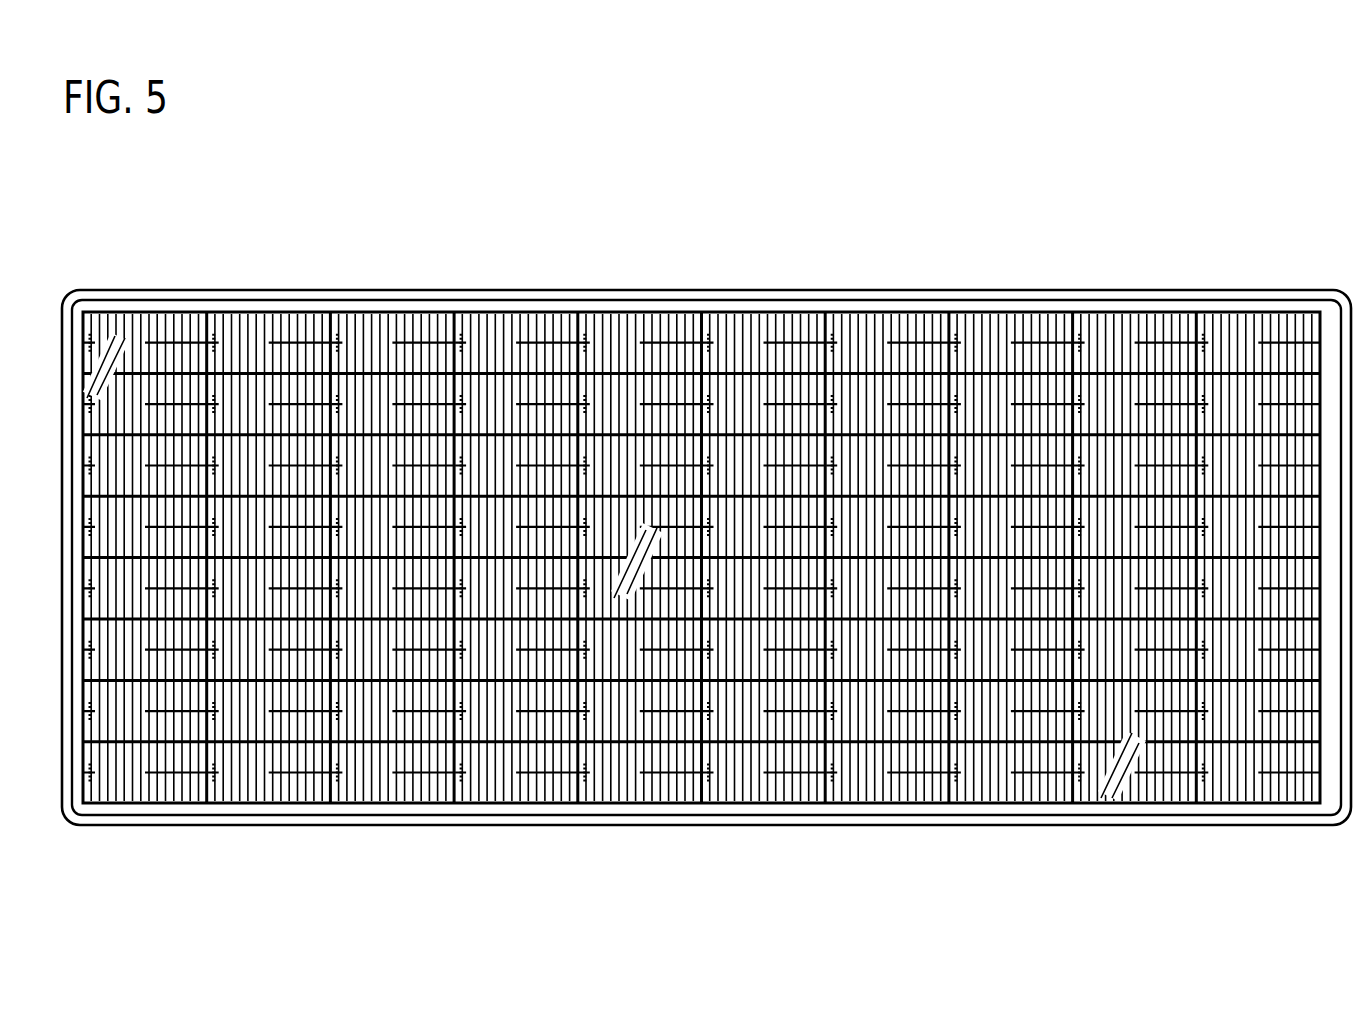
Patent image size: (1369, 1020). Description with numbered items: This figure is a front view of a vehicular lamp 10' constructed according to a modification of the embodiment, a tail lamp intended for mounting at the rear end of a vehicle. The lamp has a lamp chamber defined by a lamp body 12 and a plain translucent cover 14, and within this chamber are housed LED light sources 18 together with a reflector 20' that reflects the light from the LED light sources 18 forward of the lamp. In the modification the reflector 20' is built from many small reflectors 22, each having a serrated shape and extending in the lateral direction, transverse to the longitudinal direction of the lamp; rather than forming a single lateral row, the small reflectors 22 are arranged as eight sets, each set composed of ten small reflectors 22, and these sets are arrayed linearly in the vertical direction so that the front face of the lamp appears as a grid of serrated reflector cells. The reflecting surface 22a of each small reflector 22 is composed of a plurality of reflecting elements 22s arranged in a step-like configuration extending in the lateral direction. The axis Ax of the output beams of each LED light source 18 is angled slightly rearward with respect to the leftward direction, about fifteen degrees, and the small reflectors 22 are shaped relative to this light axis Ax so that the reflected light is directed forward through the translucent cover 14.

The vehicular lamp 10' is at (1100, 154).
The lamp body 12 is at (1122, 282).
The plain translucent cover 14 is at (706, 557).
The LED light source 18 is at (702, 318).
The reflector 20' is at (904, 248).
The small reflector 22 is at (753, 798).
The reflecting element 22s is at (380, 332).
The reflecting surface 22a is at (407, 325).
The axis Ax is at (652, 325).